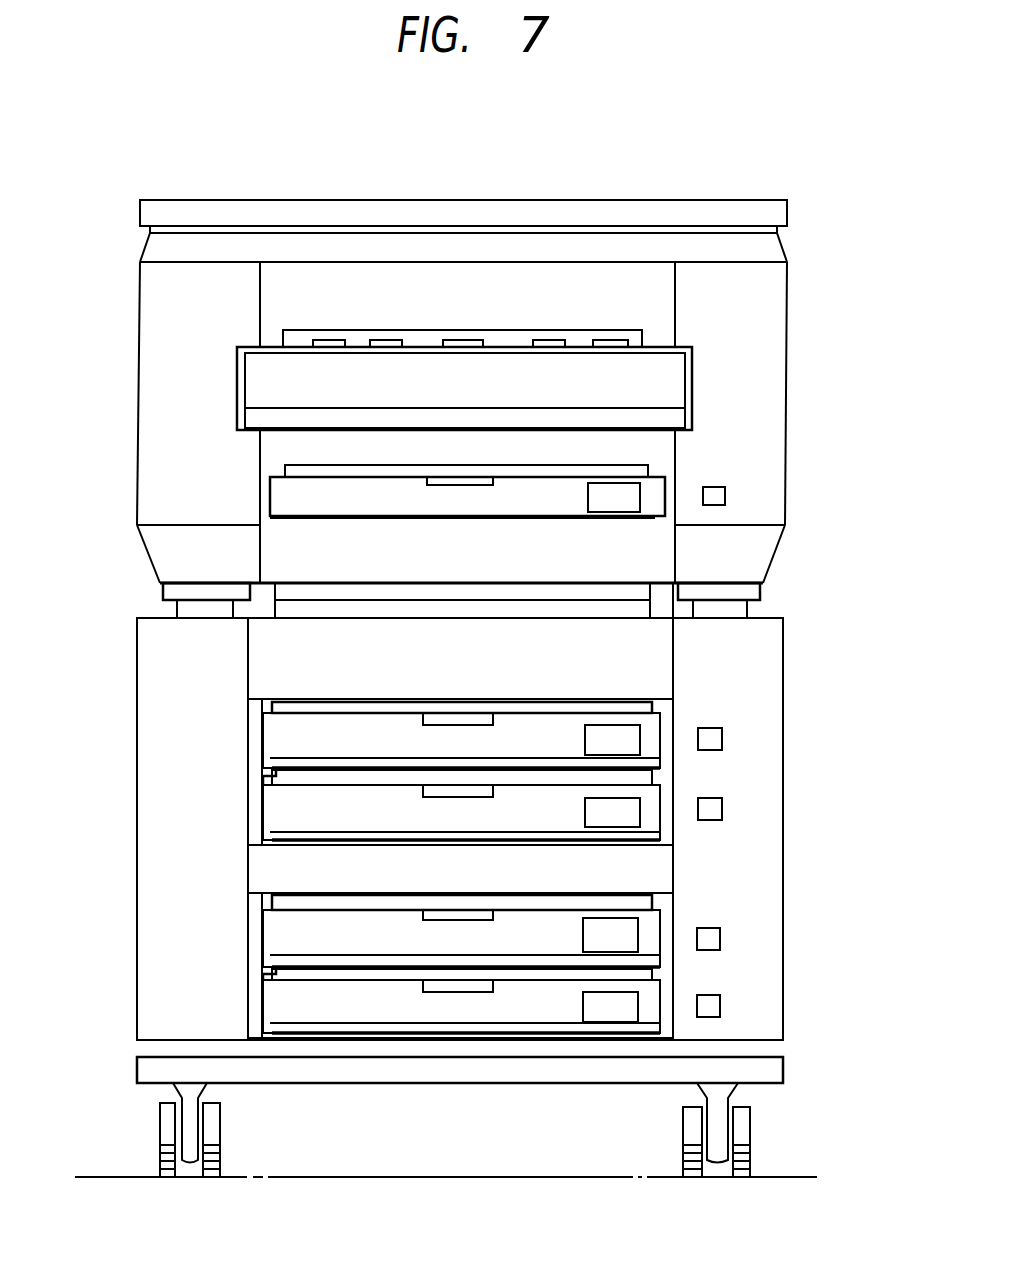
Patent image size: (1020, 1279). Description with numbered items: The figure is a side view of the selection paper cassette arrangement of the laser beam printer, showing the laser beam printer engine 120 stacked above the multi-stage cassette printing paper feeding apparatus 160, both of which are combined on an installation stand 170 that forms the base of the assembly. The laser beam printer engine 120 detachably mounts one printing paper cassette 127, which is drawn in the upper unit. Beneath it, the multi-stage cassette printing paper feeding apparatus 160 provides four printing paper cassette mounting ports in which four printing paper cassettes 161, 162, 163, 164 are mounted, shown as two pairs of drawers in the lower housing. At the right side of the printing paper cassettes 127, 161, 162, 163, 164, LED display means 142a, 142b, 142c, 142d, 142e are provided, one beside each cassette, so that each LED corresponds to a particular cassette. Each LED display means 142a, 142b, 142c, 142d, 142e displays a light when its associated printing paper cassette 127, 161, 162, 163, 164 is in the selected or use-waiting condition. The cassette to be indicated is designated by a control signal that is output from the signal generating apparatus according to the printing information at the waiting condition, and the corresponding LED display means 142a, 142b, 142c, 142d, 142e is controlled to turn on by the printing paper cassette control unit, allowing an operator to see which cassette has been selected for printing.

The laser beam printer engine 120 is at (467, 409).
The printing paper cassette 127 is at (278, 498).
The LED display means 142a is at (725, 496).
The LED display means 142b is at (722, 738).
The LED display means 142c is at (722, 808).
The LED display means 142d is at (720, 935).
The LED display means 142e is at (720, 1005).
The multi-stage cassette printing paper feeding apparatus 160 is at (468, 897).
The printing paper cassette 161 is at (280, 738).
The printing paper cassette 162 is at (277, 810).
The printing paper cassette 163 is at (273, 935).
The printing paper cassette 164 is at (272, 1003).
The installation stand 170 is at (772, 1080).